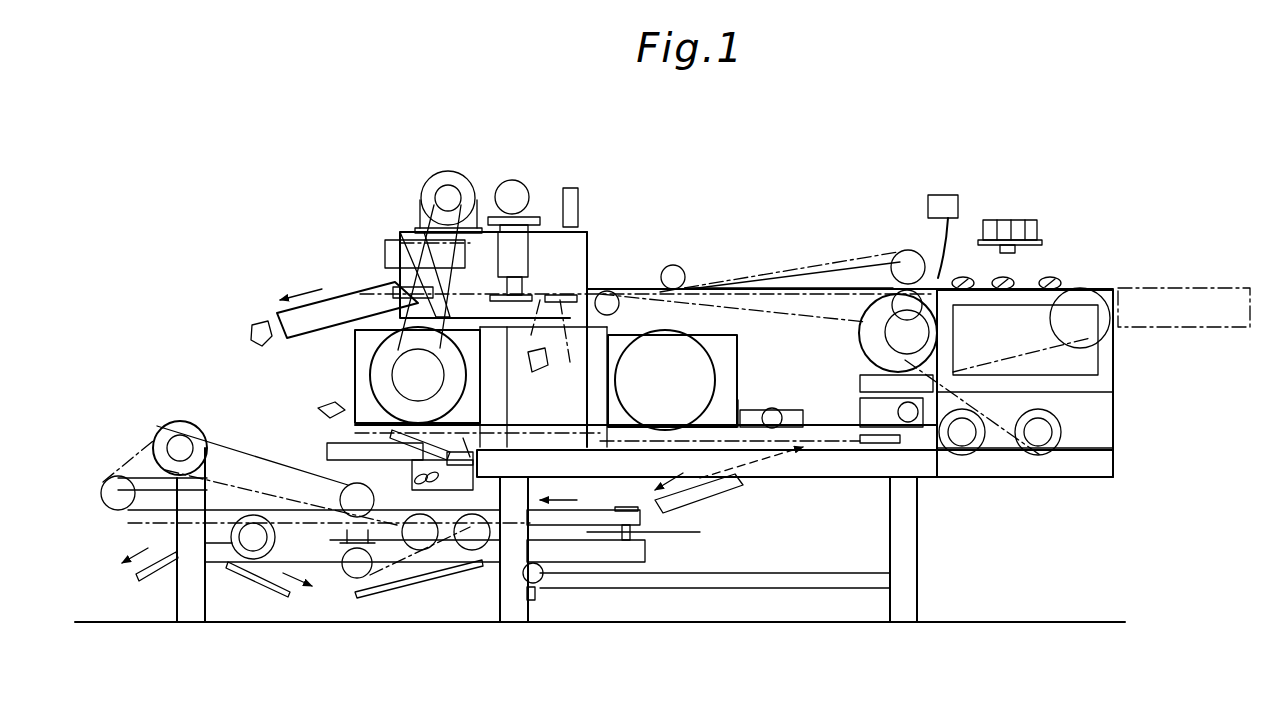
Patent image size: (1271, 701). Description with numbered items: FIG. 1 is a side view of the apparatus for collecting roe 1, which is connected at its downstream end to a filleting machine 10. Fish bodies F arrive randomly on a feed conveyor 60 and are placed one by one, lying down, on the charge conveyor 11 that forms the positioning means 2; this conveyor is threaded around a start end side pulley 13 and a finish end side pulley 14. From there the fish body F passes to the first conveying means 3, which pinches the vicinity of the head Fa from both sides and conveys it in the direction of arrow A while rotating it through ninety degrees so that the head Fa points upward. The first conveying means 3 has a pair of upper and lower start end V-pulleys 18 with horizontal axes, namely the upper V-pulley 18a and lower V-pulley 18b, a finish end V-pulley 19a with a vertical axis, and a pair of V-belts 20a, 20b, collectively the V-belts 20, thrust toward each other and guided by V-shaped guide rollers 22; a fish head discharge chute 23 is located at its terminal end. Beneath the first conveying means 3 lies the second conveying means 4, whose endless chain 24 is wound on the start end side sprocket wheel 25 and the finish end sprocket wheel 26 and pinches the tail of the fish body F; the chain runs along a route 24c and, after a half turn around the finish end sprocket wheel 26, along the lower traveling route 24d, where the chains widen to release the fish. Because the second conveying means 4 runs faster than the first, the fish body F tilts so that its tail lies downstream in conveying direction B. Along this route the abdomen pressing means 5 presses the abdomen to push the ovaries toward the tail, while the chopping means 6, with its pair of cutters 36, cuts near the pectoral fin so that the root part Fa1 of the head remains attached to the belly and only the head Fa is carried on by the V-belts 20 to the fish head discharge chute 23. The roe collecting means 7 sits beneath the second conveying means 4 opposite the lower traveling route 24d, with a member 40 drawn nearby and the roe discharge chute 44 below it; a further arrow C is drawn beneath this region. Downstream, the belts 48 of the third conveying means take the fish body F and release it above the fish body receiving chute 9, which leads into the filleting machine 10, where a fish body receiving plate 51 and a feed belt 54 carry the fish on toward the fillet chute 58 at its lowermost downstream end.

The apparatus for collecting roe 1 is at (276, 212).
The positioning means 2 is at (1098, 282).
The first conveying means 3 is at (842, 257).
The second conveying means 4 is at (733, 331).
The abdomen pressing means 5 is at (560, 338).
The chopping means 6 is at (530, 183).
The roe collecting means 7 is at (481, 462).
The fish body receiving chute 9 is at (698, 487).
The filleting machine 10 is at (345, 582).
The charge conveyor 11 is at (1033, 280).
The start end side pulley 13 is at (1103, 327).
The finish end side pulley 14 is at (868, 343).
The start end V-pulleys 18 is at (878, 176).
The upper start end V-pulley 18a is at (917, 258).
The lower start end V-pulley 18b is at (882, 297).
The finish end V-pulley 19a is at (403, 279).
The V-belts 20 is at (780, 216).
The V-belt 20a is at (750, 276).
The V-belt 20b is at (798, 287).
The V-shaped guide rollers 22 is at (676, 264).
The fish head discharge chute 23 is at (277, 312).
The endless chains 24 is at (618, 296).
The guide section c 24c is at (505, 353).
The lower traveling route 24d is at (505, 379).
The start end side sprocket wheel 25 is at (707, 370).
The finish end sprocket wheel 26 is at (372, 347).
The cutters 36 is at (528, 298).
The stripping plate 40 is at (420, 437).
The roe discharge chute 44 is at (412, 472).
The belts 48 is at (838, 440).
The fish body receiving plate 51 is at (687, 530).
The feed belt 54 is at (563, 517).
The fillet chute 58 is at (150, 578).
The feed conveyor 60 is at (1212, 295).
The conveying direction arrow A is at (640, 315).
The conveying direction B is at (343, 340).
The sheet conveying direction C is at (535, 462).
The fish body F is at (325, 395).
The head Fa is at (573, 263).
The root part of the head Fa1 is at (560, 292).